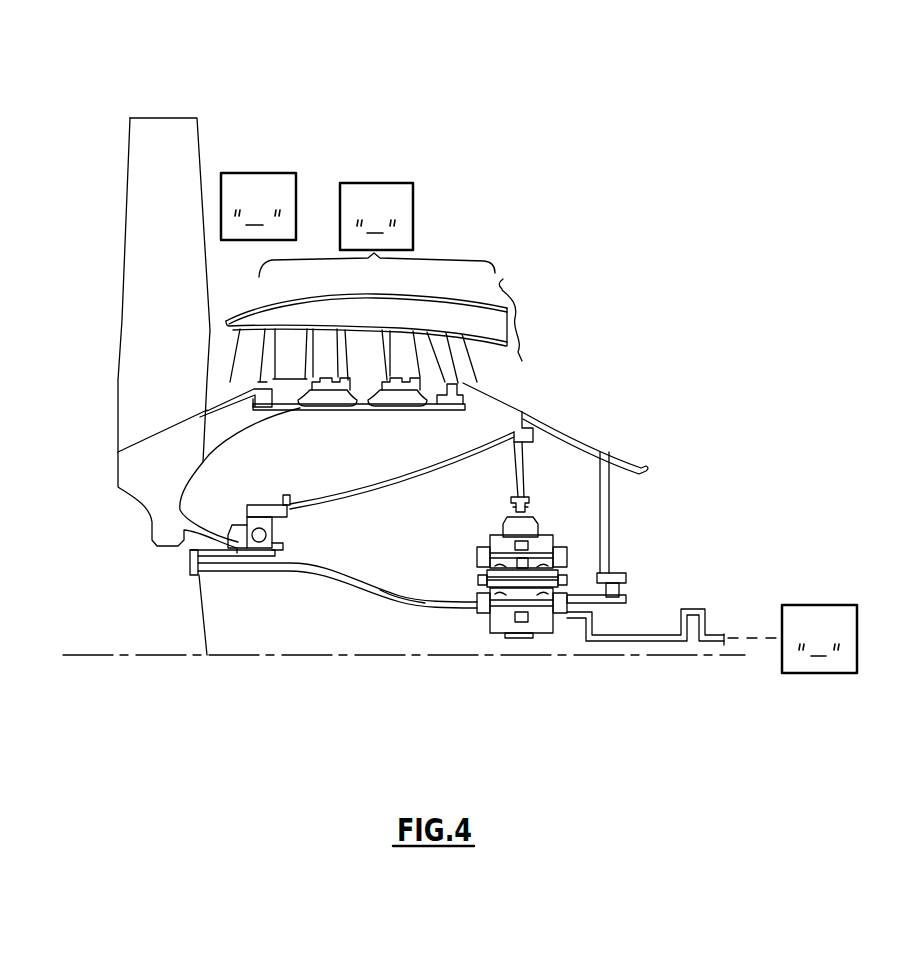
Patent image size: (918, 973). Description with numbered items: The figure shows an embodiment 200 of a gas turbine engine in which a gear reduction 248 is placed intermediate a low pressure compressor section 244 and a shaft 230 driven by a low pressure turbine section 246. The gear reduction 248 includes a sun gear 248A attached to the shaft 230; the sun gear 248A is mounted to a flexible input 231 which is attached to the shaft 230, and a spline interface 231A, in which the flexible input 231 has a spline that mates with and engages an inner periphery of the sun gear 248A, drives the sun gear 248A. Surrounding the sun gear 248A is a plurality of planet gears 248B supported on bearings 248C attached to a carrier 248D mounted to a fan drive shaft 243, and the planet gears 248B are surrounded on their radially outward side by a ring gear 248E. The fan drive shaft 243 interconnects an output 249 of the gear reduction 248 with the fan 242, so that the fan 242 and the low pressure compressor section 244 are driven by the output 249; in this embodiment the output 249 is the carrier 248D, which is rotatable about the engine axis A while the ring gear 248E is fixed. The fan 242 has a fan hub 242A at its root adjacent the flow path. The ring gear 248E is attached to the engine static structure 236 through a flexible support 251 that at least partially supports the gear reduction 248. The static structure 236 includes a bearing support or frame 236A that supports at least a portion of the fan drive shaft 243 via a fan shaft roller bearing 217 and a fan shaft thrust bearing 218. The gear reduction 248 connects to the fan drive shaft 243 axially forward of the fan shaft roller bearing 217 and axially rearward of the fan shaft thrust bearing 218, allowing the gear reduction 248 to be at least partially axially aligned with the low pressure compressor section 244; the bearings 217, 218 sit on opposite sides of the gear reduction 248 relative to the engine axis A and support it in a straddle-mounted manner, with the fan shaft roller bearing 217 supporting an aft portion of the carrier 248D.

The embodiment 200 is at (98, 96).
The fan 242 is at (176, 183).
The fan hub 242A is at (147, 521).
The low pressure compressor section 244 is at (413, 218).
The engine static structure 236 is at (560, 413).
The bearing support or frame 236A is at (375, 485).
The fan shaft thrust bearing 218 is at (267, 505).
The fan drive shaft 243 is at (330, 573).
The output 249 is at (411, 608).
The flexible support 251 is at (510, 515).
The gear reduction 248 is at (411, 605).
The sun gear 248A is at (492, 627).
The planet gears 248B is at (492, 566).
The bearings 248C is at (478, 580).
The carrier 248D is at (474, 610).
The ring gear 248E is at (503, 530).
The spline interface 231A is at (528, 633).
The flexible input 231 is at (636, 642).
The fan shaft roller bearing 217 is at (622, 574).
The low pressure turbine section 246 is at (801, 605).
The shaft 230 is at (753, 641).
The engine axis A is at (693, 656).